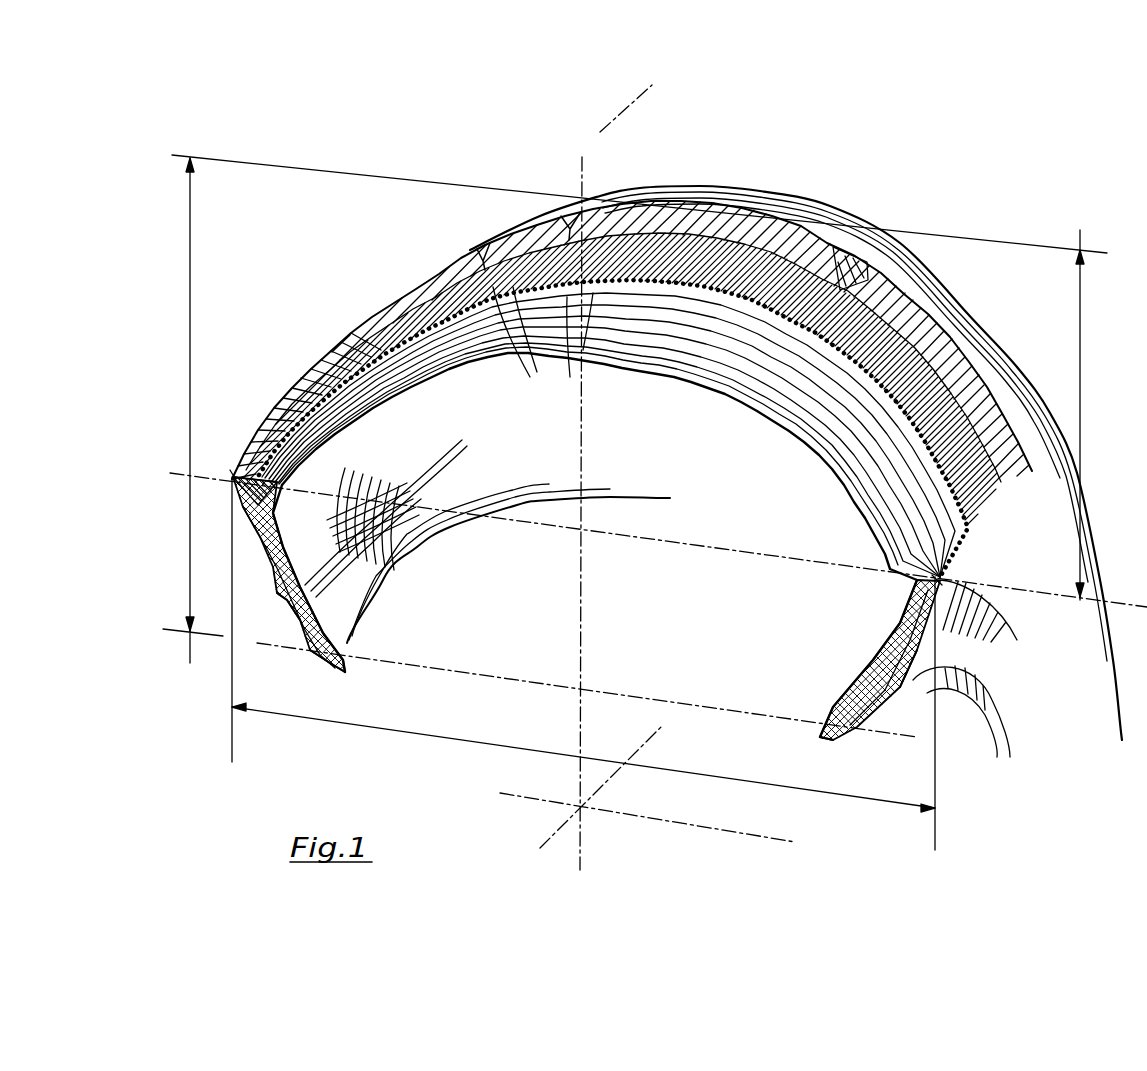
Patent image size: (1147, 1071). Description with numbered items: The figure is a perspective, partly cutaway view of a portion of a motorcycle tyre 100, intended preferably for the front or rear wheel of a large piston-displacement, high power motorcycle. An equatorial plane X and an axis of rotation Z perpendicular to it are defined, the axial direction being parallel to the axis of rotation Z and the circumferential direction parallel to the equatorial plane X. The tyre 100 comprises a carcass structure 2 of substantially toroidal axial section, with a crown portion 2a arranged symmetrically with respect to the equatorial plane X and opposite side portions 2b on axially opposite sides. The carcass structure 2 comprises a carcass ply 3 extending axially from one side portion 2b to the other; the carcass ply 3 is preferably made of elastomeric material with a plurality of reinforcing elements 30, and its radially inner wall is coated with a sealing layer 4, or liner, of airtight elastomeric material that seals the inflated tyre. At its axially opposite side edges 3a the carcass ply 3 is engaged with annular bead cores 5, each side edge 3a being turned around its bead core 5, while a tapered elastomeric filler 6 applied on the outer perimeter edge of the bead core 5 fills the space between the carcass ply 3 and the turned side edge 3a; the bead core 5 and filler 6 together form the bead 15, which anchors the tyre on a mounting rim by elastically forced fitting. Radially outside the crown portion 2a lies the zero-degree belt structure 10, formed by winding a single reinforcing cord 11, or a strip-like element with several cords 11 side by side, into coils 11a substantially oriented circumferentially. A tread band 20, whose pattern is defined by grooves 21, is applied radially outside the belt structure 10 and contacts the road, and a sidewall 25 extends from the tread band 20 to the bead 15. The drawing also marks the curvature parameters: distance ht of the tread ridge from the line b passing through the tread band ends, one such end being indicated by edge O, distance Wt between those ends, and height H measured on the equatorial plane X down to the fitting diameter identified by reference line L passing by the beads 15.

The tyre 100 is at (952, 190).
The belt structure 10 is at (915, 346).
The tread band 20 is at (807, 225).
The grooves 21 is at (480, 245).
The reinforcing cord 11 is at (463, 310).
The coils 11a is at (524, 350).
The reinforcing elements 30 is at (560, 380).
The carcass structure 2 is at (687, 427).
The crown portion 2a is at (625, 377).
The side portions 2b is at (402, 602).
The carcass ply 3 is at (790, 455).
The sealing layer 4 is at (830, 503).
The bead core 5 is at (357, 660).
The elastomeric filler 6 is at (300, 624).
The bead 15 is at (293, 652).
The side edges 3a is at (323, 663).
The sidewall 25 is at (255, 543).
The edge O is at (232, 473).
The line b- b is at (212, 475).
The height H is at (190, 383).
The distance ht is at (1075, 398).
The reference line L is at (568, 678).
The distance wt Wt is at (475, 740).
The axis of rotation Z is at (660, 817).
The equatorial plane X- X is at (606, 138).